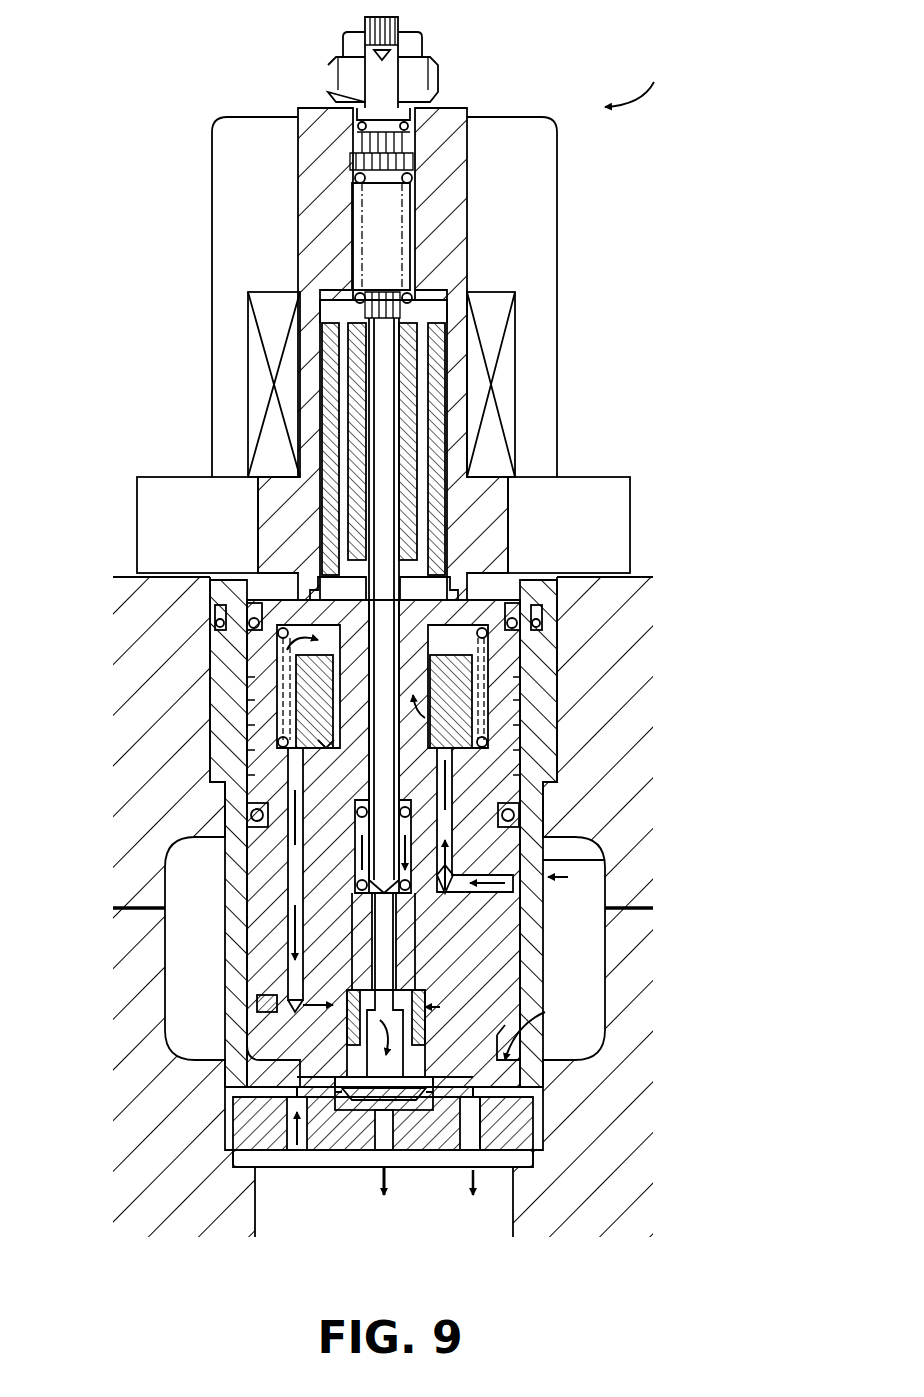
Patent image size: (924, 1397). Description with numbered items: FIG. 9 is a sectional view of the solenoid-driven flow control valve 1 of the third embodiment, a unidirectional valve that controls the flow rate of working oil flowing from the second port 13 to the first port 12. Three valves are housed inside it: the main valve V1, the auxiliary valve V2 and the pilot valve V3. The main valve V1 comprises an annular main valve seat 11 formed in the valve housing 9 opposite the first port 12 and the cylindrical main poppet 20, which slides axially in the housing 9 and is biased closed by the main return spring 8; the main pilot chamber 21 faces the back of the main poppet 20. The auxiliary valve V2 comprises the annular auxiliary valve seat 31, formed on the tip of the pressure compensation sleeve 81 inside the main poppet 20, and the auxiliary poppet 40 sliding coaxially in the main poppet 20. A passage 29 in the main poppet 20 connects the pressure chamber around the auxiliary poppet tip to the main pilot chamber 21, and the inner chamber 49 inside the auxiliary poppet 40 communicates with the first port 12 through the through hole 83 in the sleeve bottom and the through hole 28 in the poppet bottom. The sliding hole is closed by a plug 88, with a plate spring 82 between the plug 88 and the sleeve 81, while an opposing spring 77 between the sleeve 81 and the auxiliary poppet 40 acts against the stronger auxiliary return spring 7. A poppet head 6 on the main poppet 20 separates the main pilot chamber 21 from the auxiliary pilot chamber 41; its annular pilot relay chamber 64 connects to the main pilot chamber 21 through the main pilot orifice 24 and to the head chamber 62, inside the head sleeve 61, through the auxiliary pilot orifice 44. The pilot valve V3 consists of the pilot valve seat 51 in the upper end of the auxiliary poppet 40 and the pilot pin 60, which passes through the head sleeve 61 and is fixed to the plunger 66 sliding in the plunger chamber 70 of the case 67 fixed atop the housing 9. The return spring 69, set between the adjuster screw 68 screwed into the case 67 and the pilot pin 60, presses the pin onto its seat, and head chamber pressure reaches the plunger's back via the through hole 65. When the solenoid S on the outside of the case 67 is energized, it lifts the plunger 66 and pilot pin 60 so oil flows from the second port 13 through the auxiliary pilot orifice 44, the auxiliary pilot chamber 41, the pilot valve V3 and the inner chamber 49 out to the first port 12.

The solenoid-driven flow control valve 1 is at (634, 78).
The poppet head 6 is at (470, 690).
The auxiliary return spring 7 is at (345, 835).
The main return spring 8 is at (545, 632).
The valve housing 9 is at (535, 595).
The main valve seat 11 is at (520, 1195).
The first port 12 is at (490, 1147).
The second port 13 is at (555, 1020).
The main poppet 20 is at (270, 1130).
The main pilot chamber 21 is at (330, 640).
The main pilot orifice 24 is at (330, 735).
The through hole 28 is at (395, 1142).
The passage 29 is at (365, 895).
The auxiliary valve seat 31 is at (345, 1030).
The auxiliary poppet 40 is at (365, 940).
The auxiliary pilot chamber 41 is at (352, 860).
The auxiliary pilot orifice 44 is at (560, 712).
The inner chamber 49 is at (380, 962).
The pilot valve seat 51 is at (545, 935).
The pilot pin 60 is at (390, 405).
The head sleeve 61 is at (265, 592).
The head chamber 62 is at (300, 690).
The pilot relay chamber 64 is at (320, 770).
The through hole 65 is at (420, 450).
The plunger 66 is at (435, 348).
The case 67 is at (470, 180).
The adjuster screw 68 is at (405, 65).
The return spring 69 is at (410, 300).
The plunger chamber 70 is at (330, 305).
The opposing spring 77 is at (305, 1085).
The pressure compensation sleeve 81 is at (360, 1113).
The spring 82 is at (355, 1112).
The through hole 83 is at (335, 1117).
The plug 88 is at (445, 1142).
The solenoid S is at (265, 385).
The main valve V1 is at (297, 1170).
The auxiliary valve V2 is at (420, 1003).
The pilot valve V3 is at (347, 876).